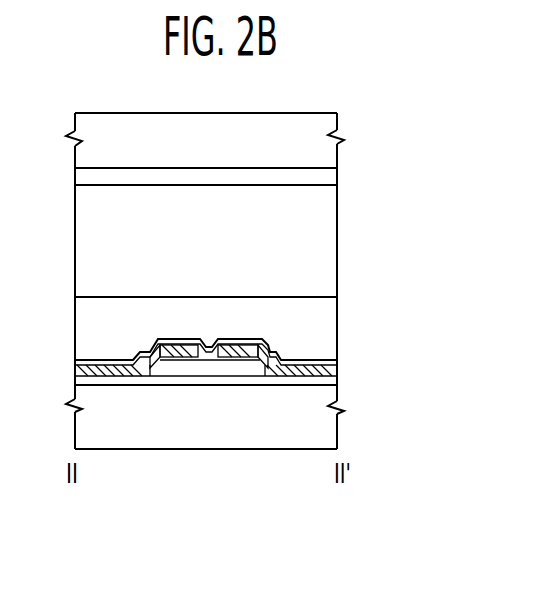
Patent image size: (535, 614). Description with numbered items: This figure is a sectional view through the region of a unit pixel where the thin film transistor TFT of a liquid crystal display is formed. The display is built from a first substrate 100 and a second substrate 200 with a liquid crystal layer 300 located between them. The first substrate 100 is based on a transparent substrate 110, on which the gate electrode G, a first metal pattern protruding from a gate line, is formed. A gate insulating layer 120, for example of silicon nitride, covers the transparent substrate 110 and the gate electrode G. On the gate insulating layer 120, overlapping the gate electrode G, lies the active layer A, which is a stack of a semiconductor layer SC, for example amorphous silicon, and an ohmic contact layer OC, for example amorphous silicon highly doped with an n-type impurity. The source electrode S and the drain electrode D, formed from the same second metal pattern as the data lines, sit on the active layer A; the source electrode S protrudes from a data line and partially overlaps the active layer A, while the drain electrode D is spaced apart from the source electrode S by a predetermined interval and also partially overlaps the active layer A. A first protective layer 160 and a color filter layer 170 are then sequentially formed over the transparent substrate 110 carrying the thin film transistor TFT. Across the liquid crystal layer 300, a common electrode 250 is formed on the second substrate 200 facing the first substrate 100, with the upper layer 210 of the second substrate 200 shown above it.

The encapsulation substrate 210 is at (332, 128).
The common electrode 250 is at (332, 183).
The second substrate 200 is at (273, 154).
The liquid crystal layer 300 is at (322, 248).
The color filter layer 170 is at (328, 312).
The first protective layer 160 is at (328, 362).
The gate insulating layer 120 is at (328, 384).
The transparent substrate 110 is at (246, 433).
The first substrate 100 is at (273, 373).
The thin film transistor TFT is at (204, 466).
The source electrode S is at (121, 367).
The drain electrode D is at (258, 376).
The gate electrode G is at (207, 374).
The active layer A is at (205, 444).
The semiconductor layer SC is at (156, 358).
The ohmic contact layer OC is at (178, 358).